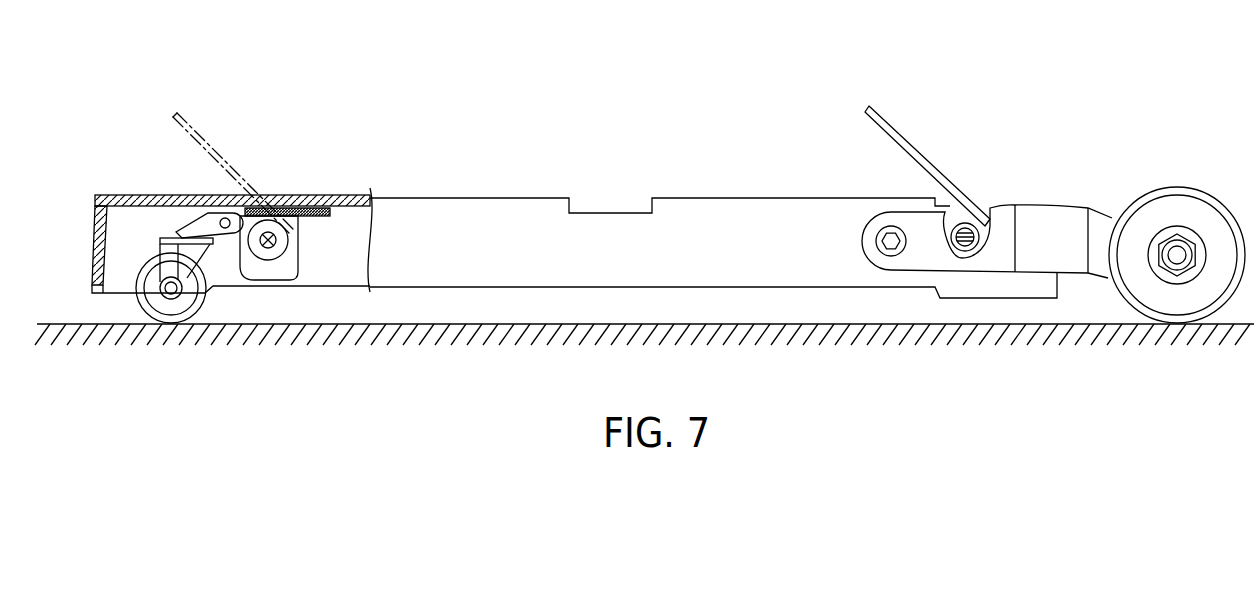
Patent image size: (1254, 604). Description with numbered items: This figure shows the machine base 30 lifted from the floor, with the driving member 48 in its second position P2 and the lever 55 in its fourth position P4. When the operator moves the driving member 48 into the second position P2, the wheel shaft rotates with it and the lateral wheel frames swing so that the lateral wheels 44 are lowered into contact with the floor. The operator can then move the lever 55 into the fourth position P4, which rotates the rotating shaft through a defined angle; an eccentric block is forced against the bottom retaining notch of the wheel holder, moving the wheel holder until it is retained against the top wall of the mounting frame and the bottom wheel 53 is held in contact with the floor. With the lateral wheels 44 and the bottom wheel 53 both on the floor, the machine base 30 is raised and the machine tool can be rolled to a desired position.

The machine base 30 is at (538, 228).
The bottom wheel 53 is at (143, 262).
The lever 55 is at (207, 150).
The driving member 48 is at (908, 150).
The lateral wheel 44 is at (1177, 205).
The fourth position P4 is at (196, 80).
The second position P2 is at (900, 82).